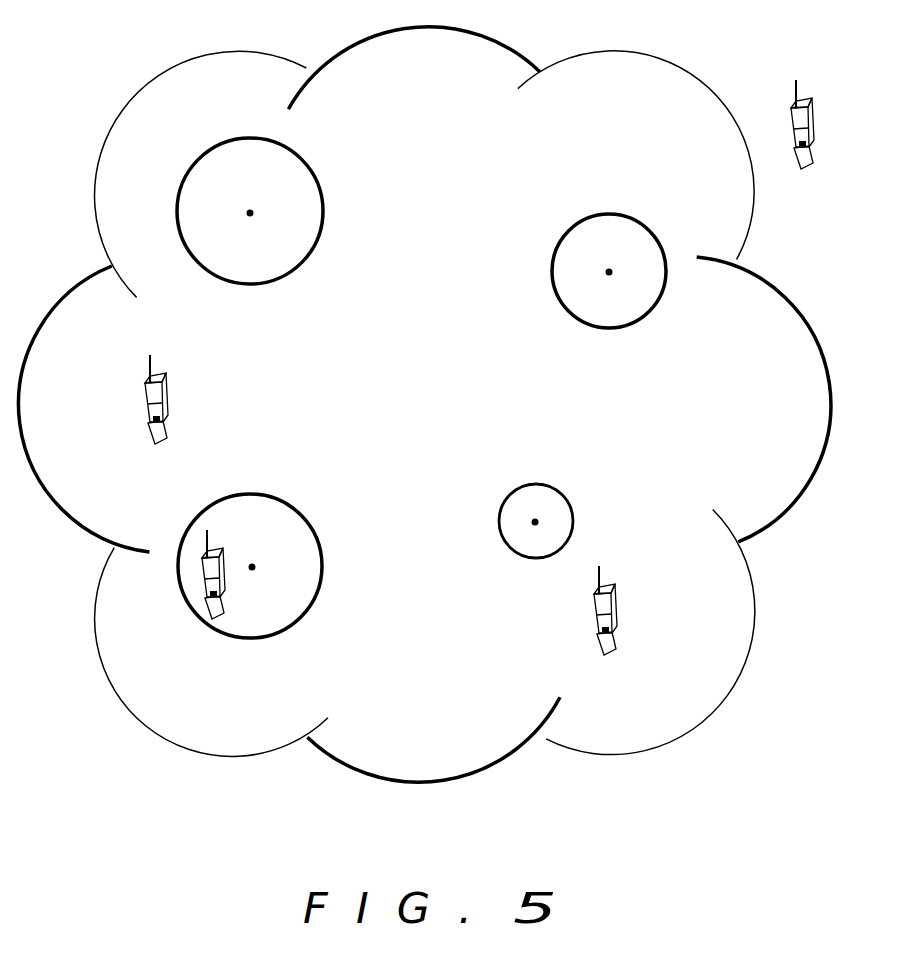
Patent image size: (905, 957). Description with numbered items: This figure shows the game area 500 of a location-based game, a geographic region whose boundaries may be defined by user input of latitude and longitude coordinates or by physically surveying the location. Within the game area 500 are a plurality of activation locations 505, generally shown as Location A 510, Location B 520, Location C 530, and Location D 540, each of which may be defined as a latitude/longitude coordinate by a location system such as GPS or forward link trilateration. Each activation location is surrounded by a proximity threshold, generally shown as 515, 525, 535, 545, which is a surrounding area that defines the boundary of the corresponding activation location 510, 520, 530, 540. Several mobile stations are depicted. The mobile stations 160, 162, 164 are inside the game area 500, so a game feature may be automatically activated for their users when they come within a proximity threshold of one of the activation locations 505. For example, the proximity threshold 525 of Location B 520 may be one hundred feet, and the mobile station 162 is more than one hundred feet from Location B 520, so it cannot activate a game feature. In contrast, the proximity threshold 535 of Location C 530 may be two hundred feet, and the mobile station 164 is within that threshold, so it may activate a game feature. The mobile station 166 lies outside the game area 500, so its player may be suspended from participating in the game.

The game area 500 is at (385, 409).
The activation locations 505 is at (442, 409).
The Location A 510 is at (250, 217).
The proximity threshold 515 is at (250, 284).
The Location B 520 is at (538, 521).
The proximity threshold 525 is at (535, 559).
The Location C 530 is at (252, 571).
The proximity threshold 535 is at (250, 639).
The Location D 540 is at (611, 275).
The proximity threshold 545 is at (607, 328).
The mobile station 160 is at (166, 381).
The mobile station 162 is at (613, 598).
The mobile station 164 is at (214, 557).
The mobile station 166 is at (809, 128).